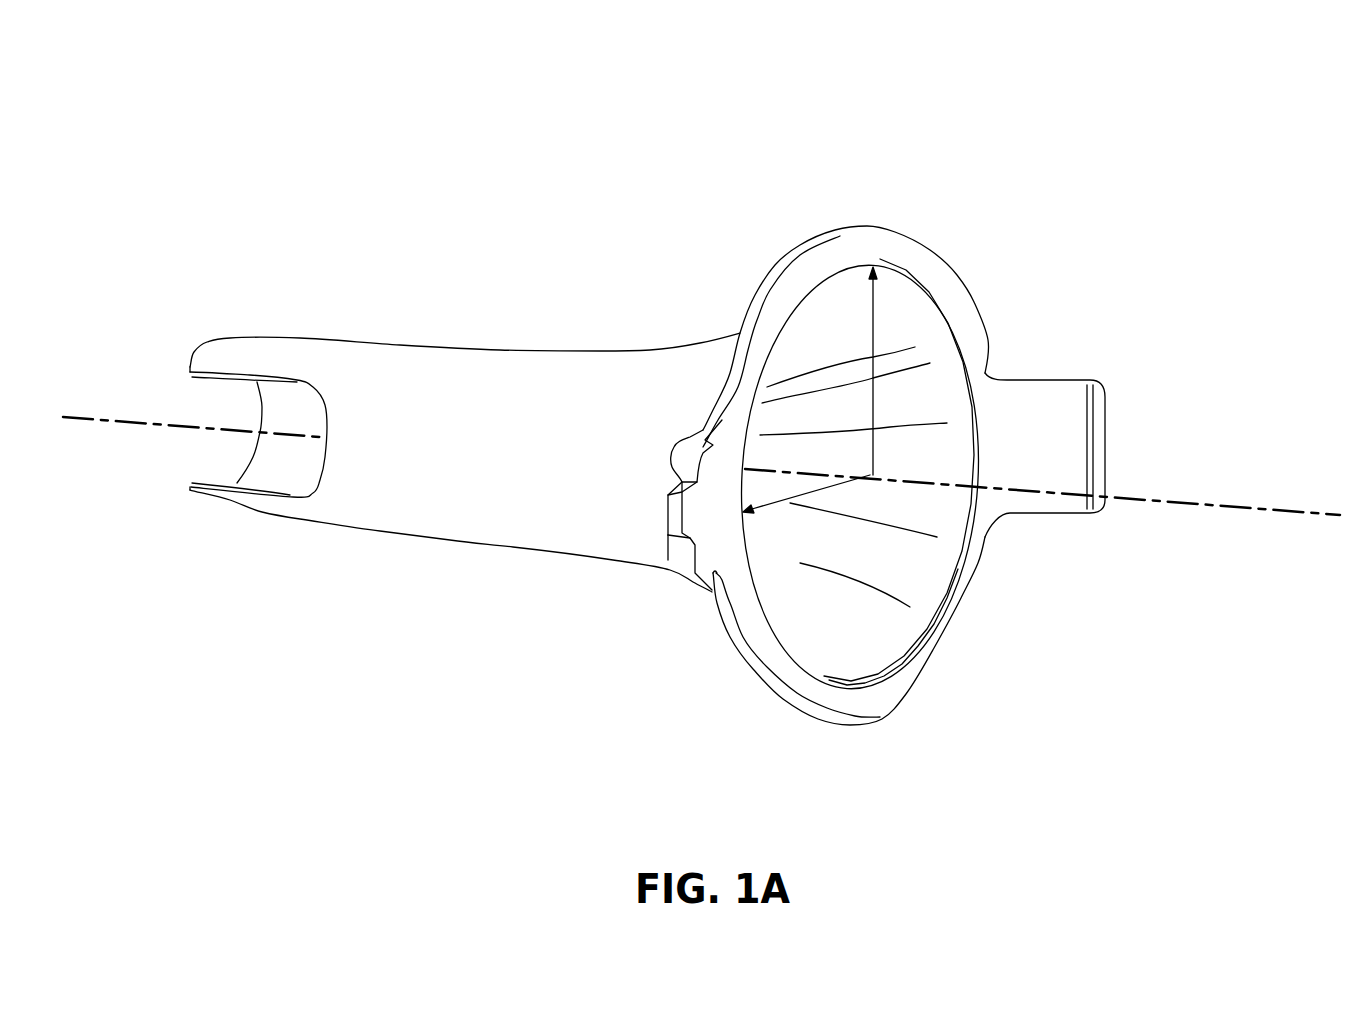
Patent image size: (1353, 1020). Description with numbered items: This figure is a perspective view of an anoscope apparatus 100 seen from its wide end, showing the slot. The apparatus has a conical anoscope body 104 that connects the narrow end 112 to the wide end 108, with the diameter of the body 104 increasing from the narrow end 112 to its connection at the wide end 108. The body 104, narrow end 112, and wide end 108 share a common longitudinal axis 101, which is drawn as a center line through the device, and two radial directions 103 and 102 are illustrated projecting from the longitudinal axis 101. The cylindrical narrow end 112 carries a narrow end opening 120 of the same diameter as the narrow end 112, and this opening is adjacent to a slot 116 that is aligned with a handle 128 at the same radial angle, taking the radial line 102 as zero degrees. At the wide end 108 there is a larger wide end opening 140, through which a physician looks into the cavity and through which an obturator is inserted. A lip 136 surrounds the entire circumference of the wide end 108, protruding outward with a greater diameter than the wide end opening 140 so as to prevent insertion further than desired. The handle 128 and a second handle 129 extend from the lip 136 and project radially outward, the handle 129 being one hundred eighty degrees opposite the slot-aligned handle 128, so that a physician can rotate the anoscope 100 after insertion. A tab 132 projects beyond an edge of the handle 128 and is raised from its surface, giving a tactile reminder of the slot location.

The anoscope apparatus 100 is at (405, 341).
The longitudinal axis 101 is at (1245, 518).
The radial direction 102 is at (773, 503).
The radial direction 103 is at (877, 310).
The anoscope body 104 is at (557, 368).
The wide end 108 is at (883, 418).
The narrow end 112 is at (245, 350).
The slot 116 is at (263, 495).
The narrow end opening 120 is at (195, 403).
The handle 128 is at (684, 560).
The handle 129 is at (1100, 418).
The tab 132 is at (670, 520).
The lip 136 is at (867, 707).
The wide end opening 140 is at (916, 581).